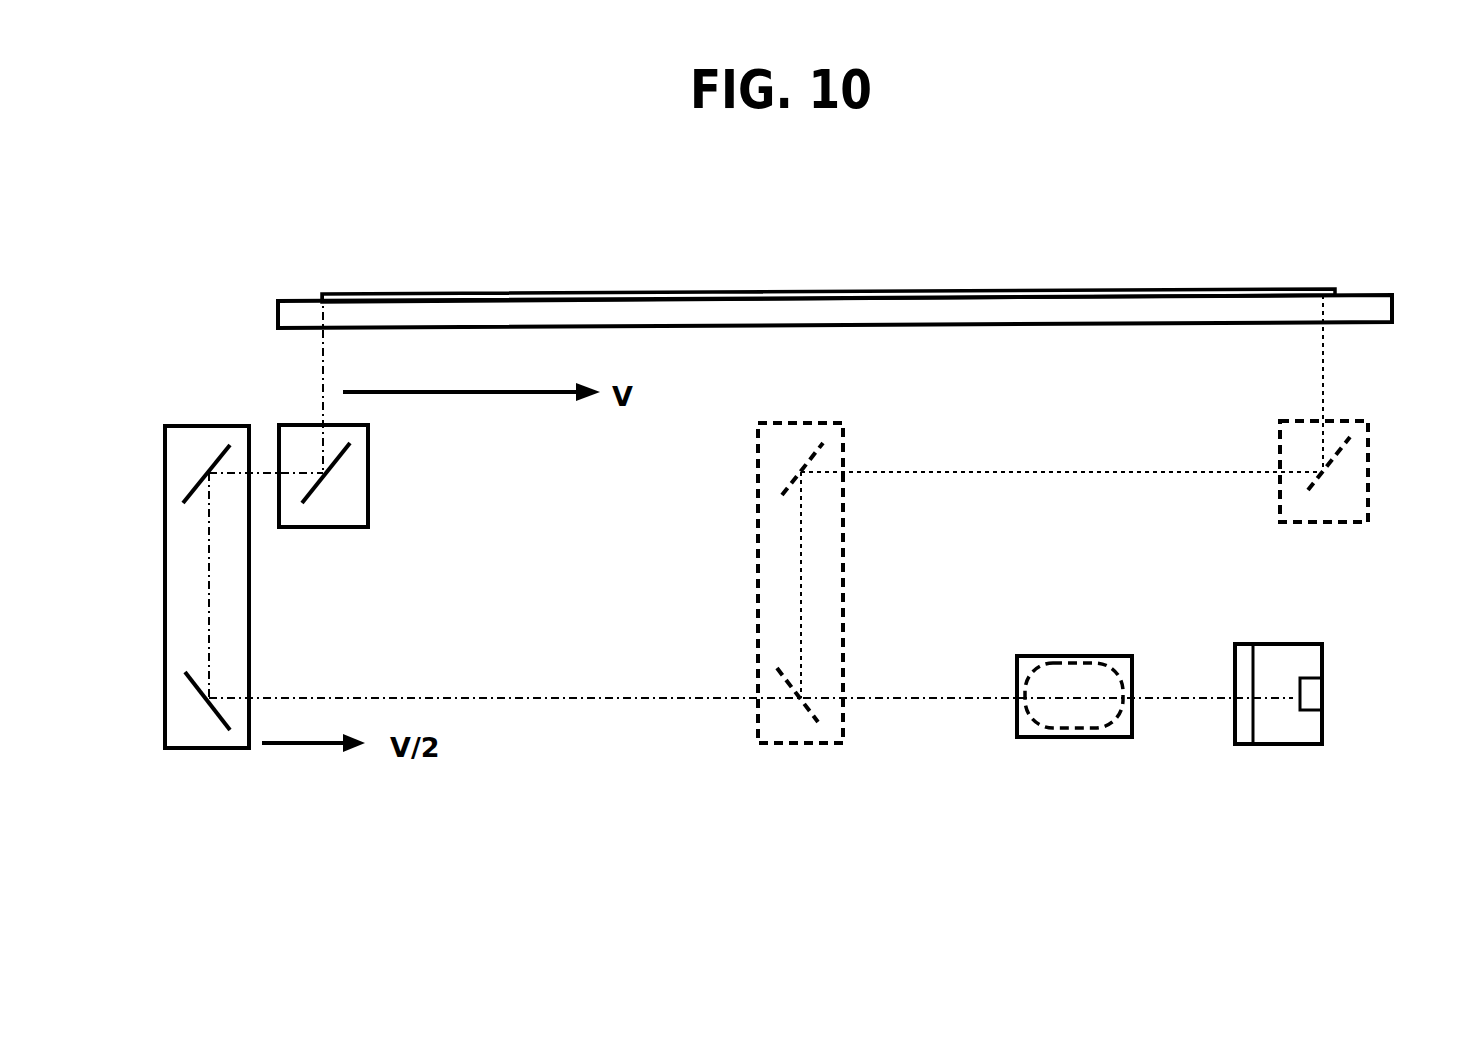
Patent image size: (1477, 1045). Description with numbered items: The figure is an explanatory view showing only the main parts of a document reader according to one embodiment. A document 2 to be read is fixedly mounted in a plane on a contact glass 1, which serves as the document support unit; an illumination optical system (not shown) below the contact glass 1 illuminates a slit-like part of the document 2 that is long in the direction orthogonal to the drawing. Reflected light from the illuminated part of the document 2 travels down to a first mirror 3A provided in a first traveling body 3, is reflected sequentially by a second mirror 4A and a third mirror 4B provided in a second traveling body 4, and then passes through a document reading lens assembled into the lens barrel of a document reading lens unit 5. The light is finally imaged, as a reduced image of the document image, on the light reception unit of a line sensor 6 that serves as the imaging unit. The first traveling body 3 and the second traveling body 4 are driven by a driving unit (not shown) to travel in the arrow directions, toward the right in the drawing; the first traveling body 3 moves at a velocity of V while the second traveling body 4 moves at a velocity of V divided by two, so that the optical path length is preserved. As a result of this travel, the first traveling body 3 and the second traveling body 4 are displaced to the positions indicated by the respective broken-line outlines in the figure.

The contact glass 1 is at (290, 305).
The document 2 is at (440, 294).
The first traveling body 3 is at (368, 515).
The first mirror 3A is at (350, 450).
The second traveling body 4 is at (249, 568).
The second mirror 4A is at (213, 458).
The third mirror 4B is at (224, 722).
The document reading lens unit 5 is at (1043, 656).
The line sensor 6 is at (1322, 663).